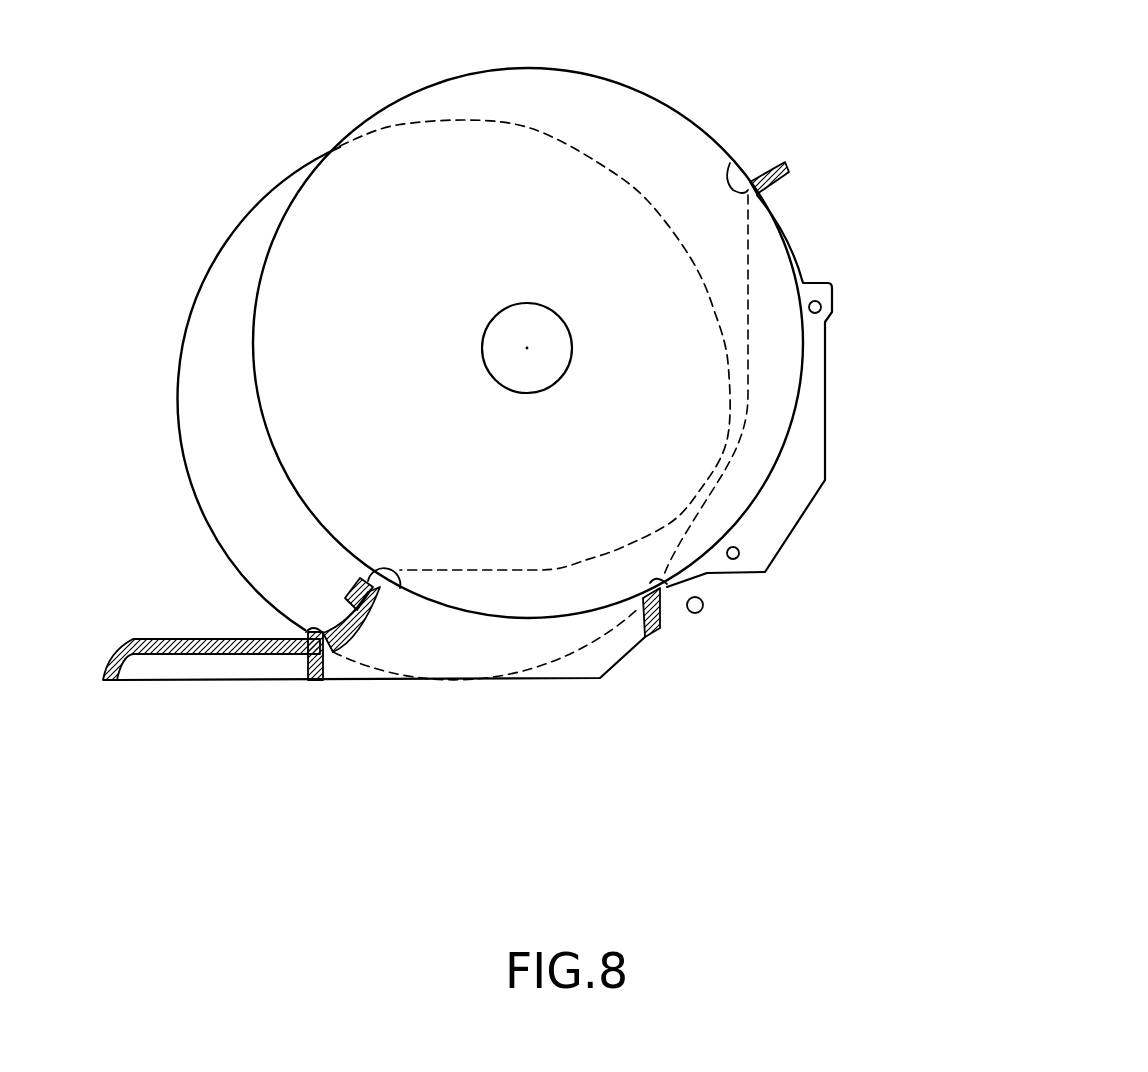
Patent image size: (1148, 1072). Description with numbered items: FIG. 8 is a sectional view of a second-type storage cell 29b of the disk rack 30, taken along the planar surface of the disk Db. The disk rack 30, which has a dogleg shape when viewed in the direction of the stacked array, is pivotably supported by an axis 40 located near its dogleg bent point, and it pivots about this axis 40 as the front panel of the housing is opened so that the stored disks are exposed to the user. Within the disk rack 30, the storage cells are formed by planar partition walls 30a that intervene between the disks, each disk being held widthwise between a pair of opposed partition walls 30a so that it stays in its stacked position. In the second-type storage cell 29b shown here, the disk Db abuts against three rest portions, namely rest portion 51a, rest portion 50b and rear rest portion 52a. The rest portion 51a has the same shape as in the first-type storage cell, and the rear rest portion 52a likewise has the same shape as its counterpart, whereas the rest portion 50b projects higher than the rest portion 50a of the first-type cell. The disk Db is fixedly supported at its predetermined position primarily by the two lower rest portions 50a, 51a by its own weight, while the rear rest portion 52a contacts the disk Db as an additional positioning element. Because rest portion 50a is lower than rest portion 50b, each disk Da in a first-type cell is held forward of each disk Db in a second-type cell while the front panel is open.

The disk Da is at (187, 484).
The disk Db is at (675, 112).
The disk rack 30 is at (792, 531).
The partition wall 30a is at (545, 567).
The second-type storage cell 29b is at (612, 655).
The axis 40 is at (702, 613).
The rest portion 50a is at (298, 653).
The rest portion 50b is at (392, 568).
The rest portion 51a is at (665, 592).
The rear rest portion 52a is at (732, 170).